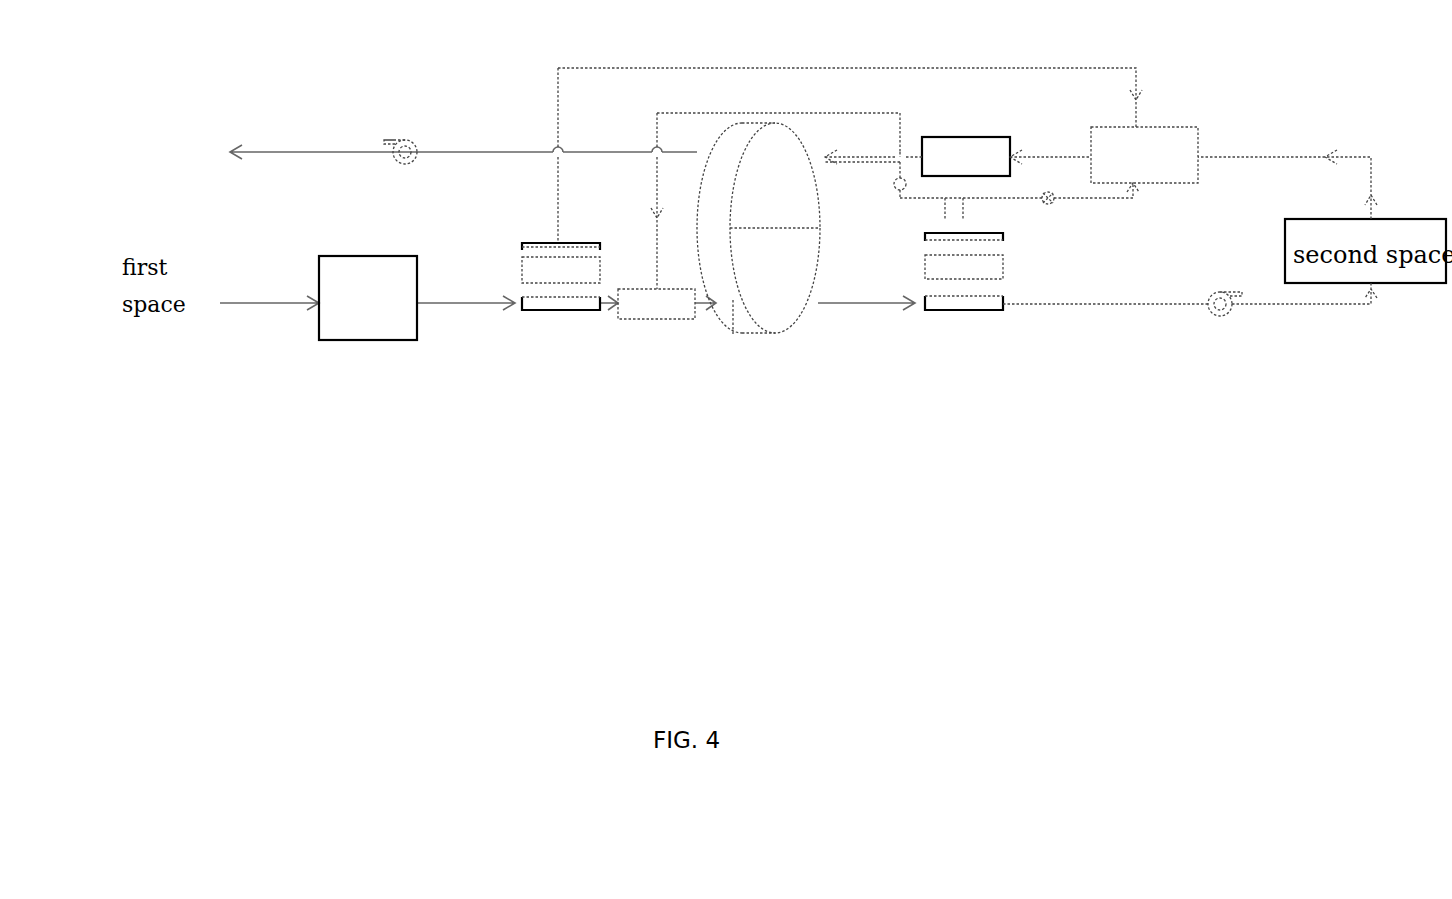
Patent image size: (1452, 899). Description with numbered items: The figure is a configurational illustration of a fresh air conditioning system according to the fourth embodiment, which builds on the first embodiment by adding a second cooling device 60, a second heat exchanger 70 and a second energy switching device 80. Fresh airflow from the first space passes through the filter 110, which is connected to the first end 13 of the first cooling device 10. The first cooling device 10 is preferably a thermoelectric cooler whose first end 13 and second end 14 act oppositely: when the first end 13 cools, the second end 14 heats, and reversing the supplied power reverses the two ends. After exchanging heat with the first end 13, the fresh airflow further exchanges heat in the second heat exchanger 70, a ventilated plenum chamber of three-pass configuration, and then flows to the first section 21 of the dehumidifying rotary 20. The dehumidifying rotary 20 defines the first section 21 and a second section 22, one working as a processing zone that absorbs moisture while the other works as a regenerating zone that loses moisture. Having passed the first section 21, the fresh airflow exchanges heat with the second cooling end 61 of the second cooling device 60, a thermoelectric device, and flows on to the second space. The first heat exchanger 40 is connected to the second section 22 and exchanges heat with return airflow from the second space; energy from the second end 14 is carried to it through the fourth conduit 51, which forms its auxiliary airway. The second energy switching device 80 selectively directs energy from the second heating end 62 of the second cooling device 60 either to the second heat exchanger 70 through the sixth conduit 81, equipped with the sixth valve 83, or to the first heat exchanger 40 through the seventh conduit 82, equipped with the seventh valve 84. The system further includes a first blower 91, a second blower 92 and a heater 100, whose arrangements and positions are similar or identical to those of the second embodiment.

The filter 110 is at (319, 340).
The second blower 92 is at (396, 141).
The fourth conduit 51 is at (686, 73).
The sixth conduit 81 is at (727, 111).
The second end 14 is at (550, 253).
The first cooling device 10 is at (555, 269).
The first end 13 is at (565, 300).
The second heat exchanger 70 is at (657, 309).
The dehumidifying rotary 20 is at (778, 262).
The second section 22 is at (783, 176).
The first section 21 is at (790, 280).
The heater 100 is at (952, 137).
The first heat exchanger 40 is at (1167, 140).
The sixth valve 83 is at (898, 184).
The second energy switching device 80 is at (947, 220).
The seventh conduit 82 is at (992, 202).
The seventh valve 84 is at (1048, 200).
The second heating end 62 is at (930, 237).
The second cooling device 60 is at (932, 272).
The second cooling end 61 is at (970, 303).
The first blower 91 is at (1220, 310).